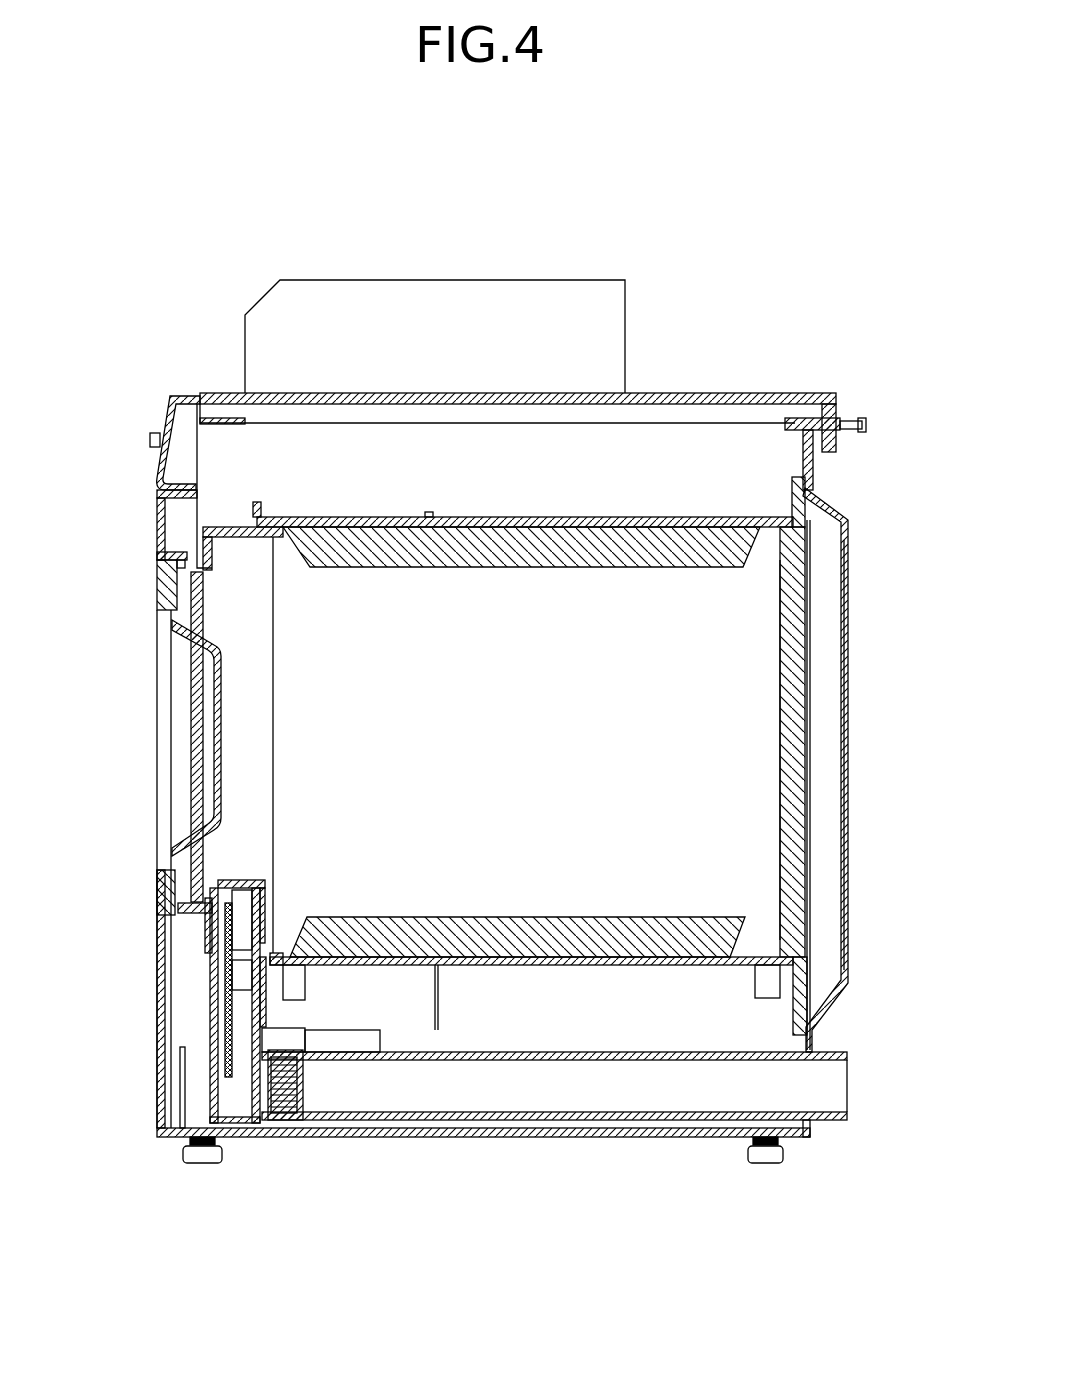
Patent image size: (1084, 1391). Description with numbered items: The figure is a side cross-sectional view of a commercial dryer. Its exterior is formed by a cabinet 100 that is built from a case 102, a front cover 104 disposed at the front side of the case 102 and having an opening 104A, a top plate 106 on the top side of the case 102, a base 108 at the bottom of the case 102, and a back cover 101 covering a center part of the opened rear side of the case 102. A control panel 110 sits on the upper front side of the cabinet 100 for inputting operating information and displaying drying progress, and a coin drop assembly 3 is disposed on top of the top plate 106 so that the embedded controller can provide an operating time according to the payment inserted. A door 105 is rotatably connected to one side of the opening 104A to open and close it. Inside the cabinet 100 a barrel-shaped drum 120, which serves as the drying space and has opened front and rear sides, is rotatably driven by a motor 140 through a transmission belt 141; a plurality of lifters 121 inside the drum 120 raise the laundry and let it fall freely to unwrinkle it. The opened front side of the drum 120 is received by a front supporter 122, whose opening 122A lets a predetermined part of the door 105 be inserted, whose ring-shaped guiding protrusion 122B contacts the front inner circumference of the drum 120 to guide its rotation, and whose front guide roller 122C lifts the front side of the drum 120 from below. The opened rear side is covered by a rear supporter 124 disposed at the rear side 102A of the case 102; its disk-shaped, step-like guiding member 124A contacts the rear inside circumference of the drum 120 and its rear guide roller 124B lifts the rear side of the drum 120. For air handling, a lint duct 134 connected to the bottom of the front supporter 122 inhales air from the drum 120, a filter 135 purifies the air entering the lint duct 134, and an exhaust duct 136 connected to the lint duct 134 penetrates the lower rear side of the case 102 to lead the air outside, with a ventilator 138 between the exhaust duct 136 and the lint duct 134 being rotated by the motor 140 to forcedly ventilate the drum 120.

The coin drop assembly 3 is at (360, 302).
The top plate 106 is at (668, 392).
The control panel 110 is at (162, 408).
The front cover 104 is at (157, 515).
The opening 104A is at (170, 565).
The door 105 is at (178, 688).
The front supporter 122 is at (205, 595).
The guiding protrusion 122B is at (257, 508).
The opening 122A is at (273, 660).
The drum 120 is at (300, 795).
The lifters 121 is at (500, 920).
The front guide roller 122C is at (302, 930).
The rear supporter 124 is at (762, 632).
The guiding member 124A is at (778, 708).
The rear guide roller 124B is at (767, 985).
The rear side 102A is at (808, 727).
The case 102 is at (813, 485).
The back cover 101 is at (847, 637).
The cabinet 100 is at (862, 836).
The exhaust duct 136 is at (625, 1085).
The base 108 is at (700, 1137).
The lint duct 134 is at (212, 1066).
The filter 135 is at (227, 1025).
The ventilator 138 is at (285, 1095).
The motor 140 is at (360, 1045).
The transmission belt 141 is at (432, 1035).